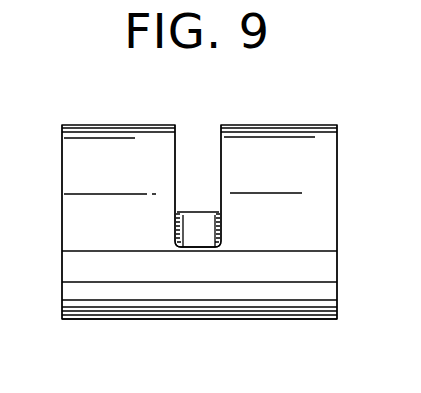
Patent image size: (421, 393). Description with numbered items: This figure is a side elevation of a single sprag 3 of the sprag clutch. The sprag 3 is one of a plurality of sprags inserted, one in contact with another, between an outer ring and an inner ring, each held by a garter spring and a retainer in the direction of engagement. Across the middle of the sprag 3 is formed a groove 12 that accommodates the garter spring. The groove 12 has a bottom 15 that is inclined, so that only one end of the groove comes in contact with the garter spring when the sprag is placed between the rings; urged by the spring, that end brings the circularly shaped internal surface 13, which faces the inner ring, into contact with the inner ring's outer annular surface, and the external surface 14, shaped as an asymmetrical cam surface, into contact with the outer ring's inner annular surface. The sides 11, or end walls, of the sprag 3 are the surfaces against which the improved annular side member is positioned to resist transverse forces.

The sprag 3 is at (108, 122).
The sides of the sprag 11 is at (62, 230).
The groove 12 is at (196, 147).
The internal sprag surface 13 is at (238, 319).
The external surface 14 is at (143, 125).
The bottom of the groove 15 is at (193, 240).